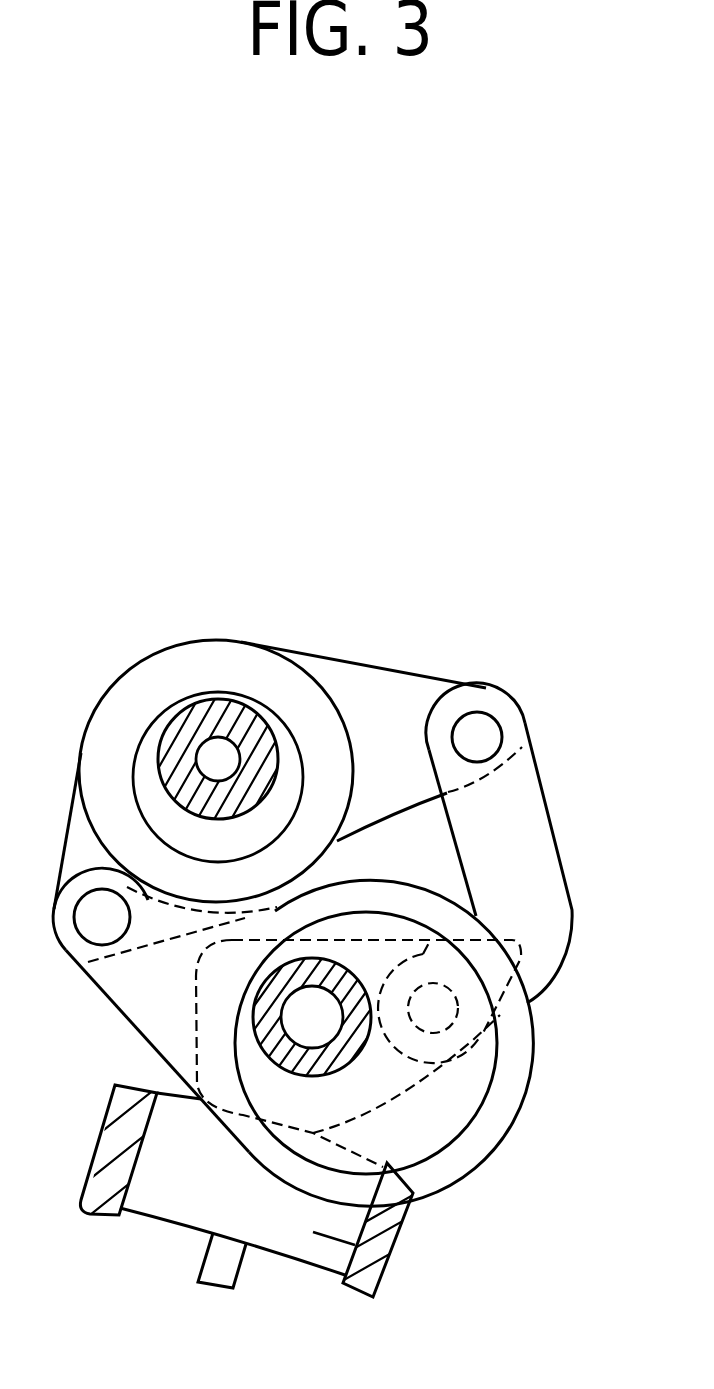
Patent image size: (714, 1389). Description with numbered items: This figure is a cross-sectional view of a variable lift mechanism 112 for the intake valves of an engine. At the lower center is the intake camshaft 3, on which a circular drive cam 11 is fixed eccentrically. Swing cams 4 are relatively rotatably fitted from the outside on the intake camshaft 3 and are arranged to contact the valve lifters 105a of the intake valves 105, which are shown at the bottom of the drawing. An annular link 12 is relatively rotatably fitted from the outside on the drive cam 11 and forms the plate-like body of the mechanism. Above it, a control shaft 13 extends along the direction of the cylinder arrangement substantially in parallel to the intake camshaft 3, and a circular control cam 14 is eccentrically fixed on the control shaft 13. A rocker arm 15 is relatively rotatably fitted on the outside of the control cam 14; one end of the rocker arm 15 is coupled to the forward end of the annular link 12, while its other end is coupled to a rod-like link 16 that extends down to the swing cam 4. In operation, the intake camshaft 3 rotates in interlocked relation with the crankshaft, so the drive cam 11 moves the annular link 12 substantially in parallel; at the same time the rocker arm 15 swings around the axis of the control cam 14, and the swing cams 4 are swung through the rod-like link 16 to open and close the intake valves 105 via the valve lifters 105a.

The intake camshaft 3 is at (358, 1050).
The swing cam 4 is at (391, 1118).
The drive cam 11 is at (472, 1133).
The annular link 12 is at (116, 1000).
The control shaft 13 is at (228, 700).
The control cam 14 is at (147, 782).
The rocker arm 15 is at (345, 658).
The rod-like link 16 is at (536, 850).
The intake valve 105 is at (222, 1257).
The valve lifter 105a is at (392, 1267).
The variable lift mechanism 112 is at (465, 637).